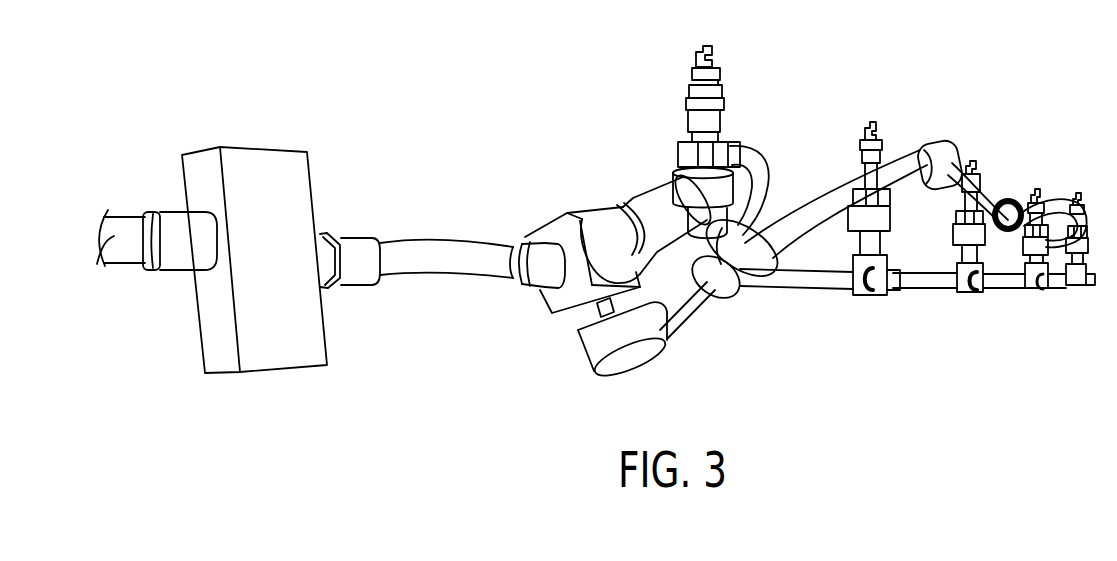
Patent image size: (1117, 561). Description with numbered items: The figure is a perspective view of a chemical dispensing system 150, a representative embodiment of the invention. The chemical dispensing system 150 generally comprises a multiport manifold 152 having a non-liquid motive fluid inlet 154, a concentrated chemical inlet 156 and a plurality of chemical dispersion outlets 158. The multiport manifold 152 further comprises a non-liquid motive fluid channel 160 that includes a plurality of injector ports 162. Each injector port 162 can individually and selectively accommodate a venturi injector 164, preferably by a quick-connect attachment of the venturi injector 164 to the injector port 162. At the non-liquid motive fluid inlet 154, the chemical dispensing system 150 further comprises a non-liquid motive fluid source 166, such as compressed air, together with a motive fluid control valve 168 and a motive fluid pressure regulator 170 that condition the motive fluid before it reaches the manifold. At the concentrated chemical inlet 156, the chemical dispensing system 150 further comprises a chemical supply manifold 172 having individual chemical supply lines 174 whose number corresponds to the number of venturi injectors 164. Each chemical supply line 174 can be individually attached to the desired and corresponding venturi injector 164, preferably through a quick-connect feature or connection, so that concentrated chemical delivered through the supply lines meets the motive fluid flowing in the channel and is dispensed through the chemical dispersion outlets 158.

The chemical dispensing system 150 is at (447, 360).
The multiport manifold 152 is at (803, 290).
The non-liquid motive fluid inlet 154 is at (178, 258).
The concentrated chemical inlet 156 is at (683, 318).
The chemical dispersion outlets 158 is at (705, 43).
The non-liquid motive fluid channel 160 is at (927, 290).
The injector ports 162 is at (873, 296).
The venturi injector 164 is at (680, 158).
The non-liquid motive fluid source 166 is at (103, 243).
The motive fluid control valve 168 is at (263, 147).
The motive fluid pressure regulator 170 is at (578, 220).
The chemical supply manifold 172 is at (740, 290).
The chemical supply lines 174 is at (760, 178).